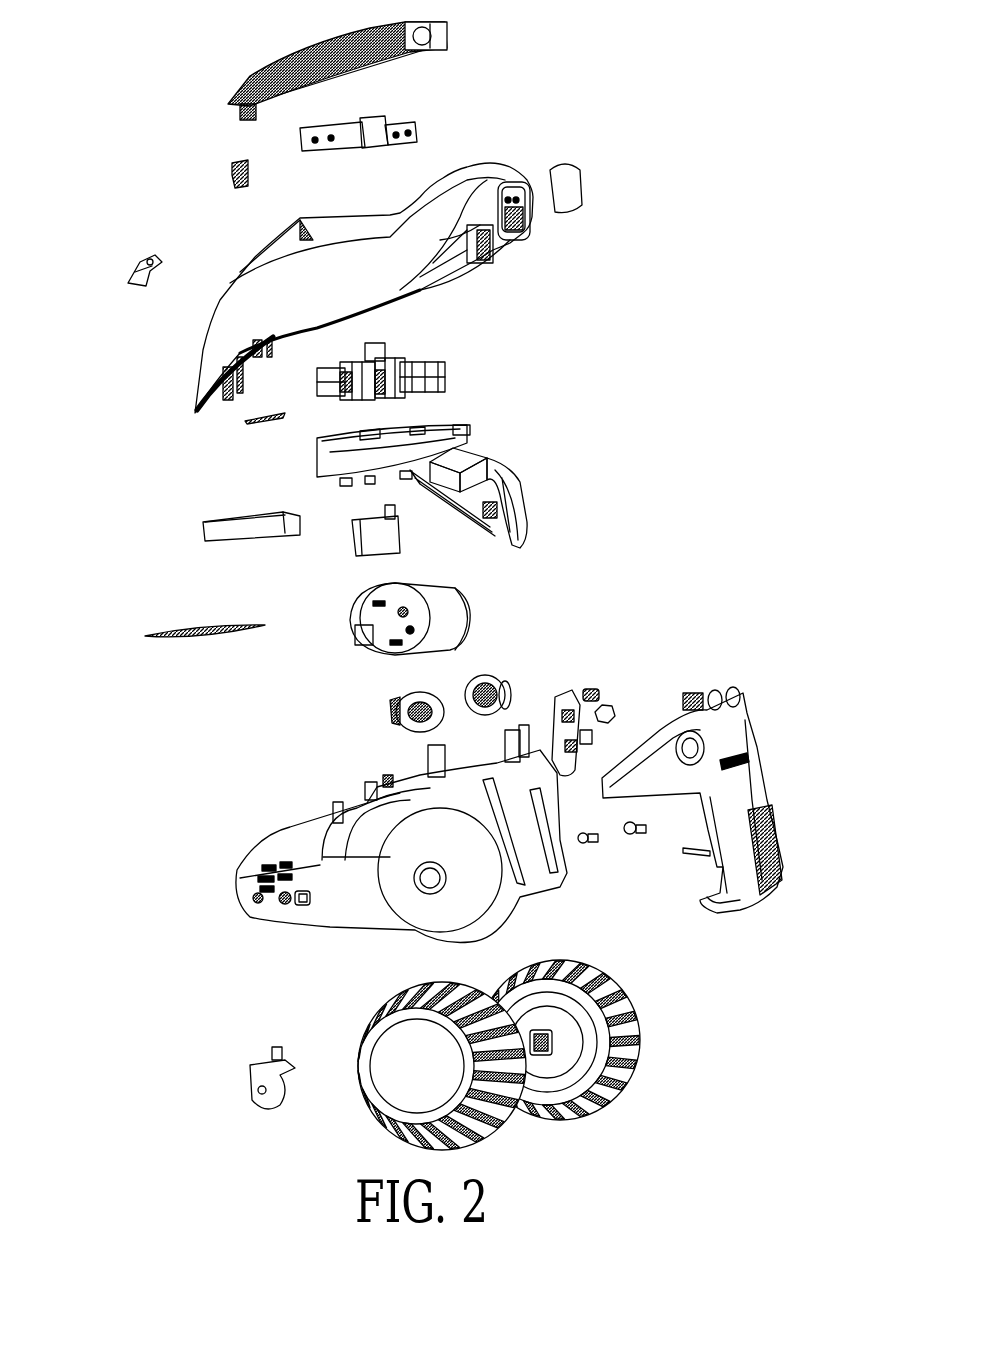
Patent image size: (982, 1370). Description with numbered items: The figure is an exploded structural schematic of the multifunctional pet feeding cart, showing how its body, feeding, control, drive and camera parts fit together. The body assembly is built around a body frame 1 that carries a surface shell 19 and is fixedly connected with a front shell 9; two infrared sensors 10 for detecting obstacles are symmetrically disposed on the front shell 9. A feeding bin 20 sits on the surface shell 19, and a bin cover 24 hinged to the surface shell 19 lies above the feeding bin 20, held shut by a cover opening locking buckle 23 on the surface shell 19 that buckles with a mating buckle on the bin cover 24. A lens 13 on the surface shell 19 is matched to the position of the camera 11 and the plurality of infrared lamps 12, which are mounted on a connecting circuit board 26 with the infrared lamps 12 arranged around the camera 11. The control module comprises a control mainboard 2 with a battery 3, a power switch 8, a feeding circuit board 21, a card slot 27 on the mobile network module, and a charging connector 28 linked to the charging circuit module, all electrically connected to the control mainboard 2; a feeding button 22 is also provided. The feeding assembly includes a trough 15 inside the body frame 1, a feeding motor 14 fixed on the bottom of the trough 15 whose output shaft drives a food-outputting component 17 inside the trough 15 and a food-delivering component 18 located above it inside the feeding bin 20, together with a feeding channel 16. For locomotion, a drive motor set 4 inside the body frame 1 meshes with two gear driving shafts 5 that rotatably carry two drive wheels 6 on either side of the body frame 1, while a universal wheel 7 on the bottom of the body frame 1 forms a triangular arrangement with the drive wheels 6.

The body frame 1 is at (345, 858).
The control mainboard 2 is at (200, 634).
The battery 3 is at (208, 532).
The drive motor set 4 is at (353, 647).
The gear driving shafts 5 is at (458, 708).
The drive wheels 6 is at (520, 1008).
The universal wheel 7 is at (250, 1075).
The power switch 8 is at (280, 902).
The front shell 9 is at (770, 895).
The infrared sensors 10 is at (633, 840).
The camera 11 is at (598, 692).
The infrared lamps 12 is at (605, 713).
The lens 13 is at (577, 195).
The feeding motor 14 is at (353, 542).
The trough 15 is at (468, 433).
The feeding channel 16 is at (530, 525).
The food-outputting component 17 is at (447, 383).
The food-delivering component 18 is at (418, 130).
The surface shell 19 is at (298, 268).
The feeding bin 20 is at (220, 297).
The feeding circuit board 21 is at (262, 418).
The feeding button 22 is at (232, 173).
The cover opening locking buckle 23 is at (130, 281).
The bin cover 24 is at (257, 73).
The connecting circuit board 26 is at (565, 693).
The card slot 27 is at (253, 903).
The charging connector 28 is at (296, 905).